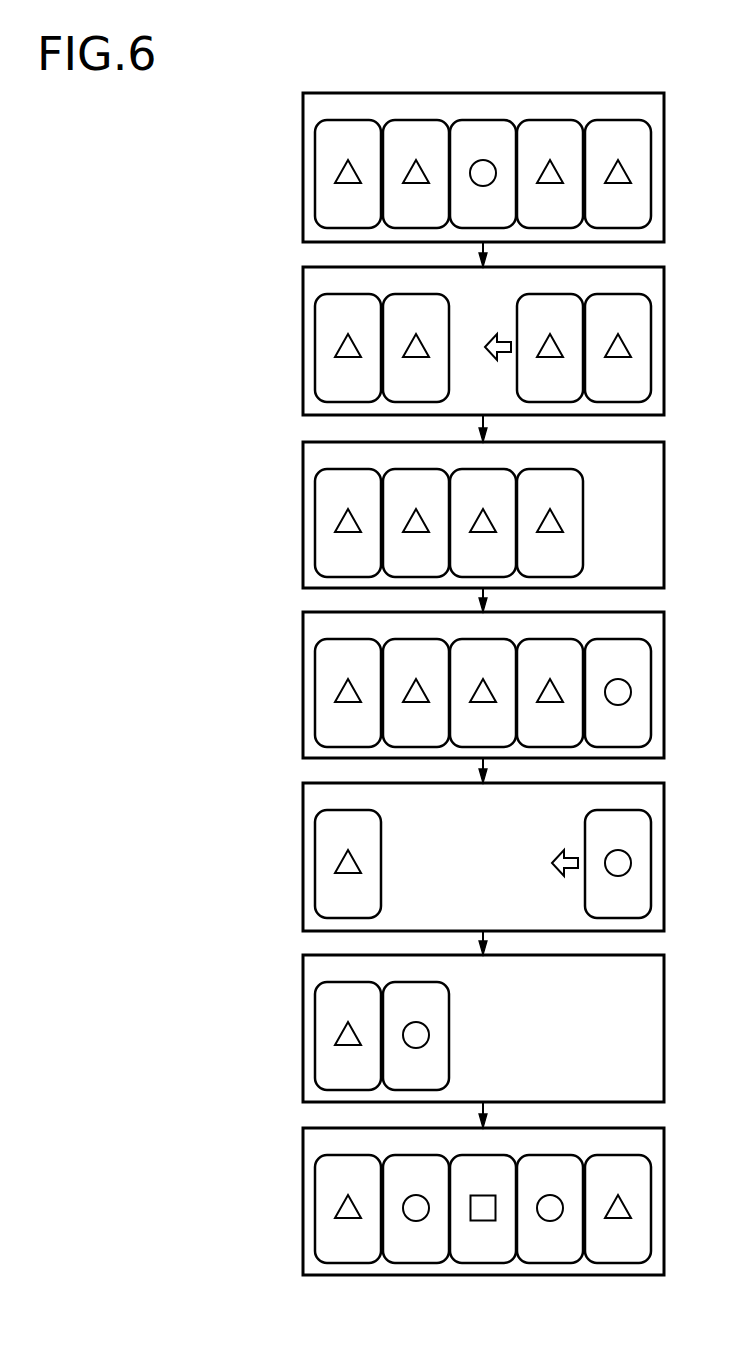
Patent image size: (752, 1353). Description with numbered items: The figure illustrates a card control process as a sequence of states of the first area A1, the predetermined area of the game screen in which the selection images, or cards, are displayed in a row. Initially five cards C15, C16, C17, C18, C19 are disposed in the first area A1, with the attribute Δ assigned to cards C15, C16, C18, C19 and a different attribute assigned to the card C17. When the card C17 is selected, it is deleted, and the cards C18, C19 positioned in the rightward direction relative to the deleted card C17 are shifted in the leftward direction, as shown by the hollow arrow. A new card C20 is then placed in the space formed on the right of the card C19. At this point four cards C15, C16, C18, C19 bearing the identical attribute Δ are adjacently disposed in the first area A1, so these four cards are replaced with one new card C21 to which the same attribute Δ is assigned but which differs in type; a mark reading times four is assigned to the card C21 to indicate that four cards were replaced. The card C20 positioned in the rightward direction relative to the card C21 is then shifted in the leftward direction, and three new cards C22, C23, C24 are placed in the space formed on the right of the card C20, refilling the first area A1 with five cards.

The first area A1 is at (665, 177).
The card C15 is at (346, 120).
The card C16 is at (414, 120).
The card C17 is at (481, 120).
The card C18 is at (548, 120).
The card C19 is at (616, 120).
The card C20 is at (616, 639).
The card C21 is at (346, 810).
The card C22 is at (481, 1155).
The card C23 is at (548, 1155).
The card C24 is at (616, 1155).